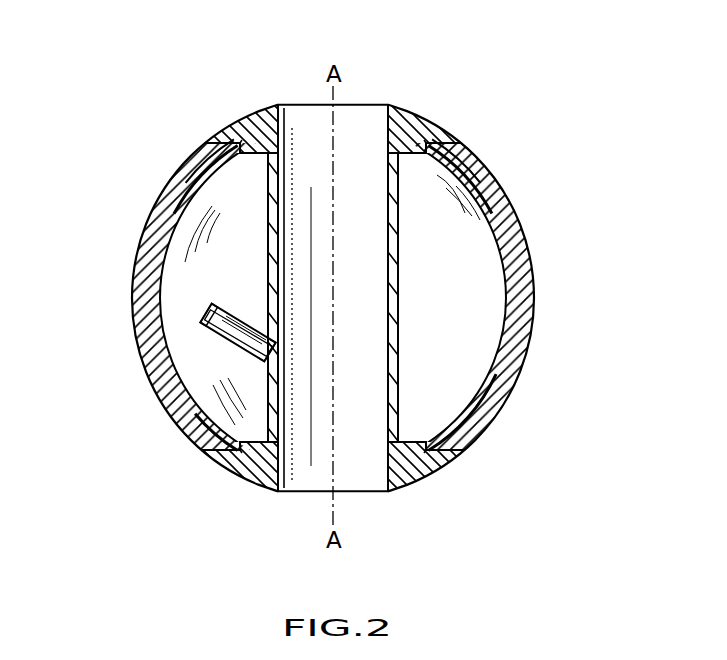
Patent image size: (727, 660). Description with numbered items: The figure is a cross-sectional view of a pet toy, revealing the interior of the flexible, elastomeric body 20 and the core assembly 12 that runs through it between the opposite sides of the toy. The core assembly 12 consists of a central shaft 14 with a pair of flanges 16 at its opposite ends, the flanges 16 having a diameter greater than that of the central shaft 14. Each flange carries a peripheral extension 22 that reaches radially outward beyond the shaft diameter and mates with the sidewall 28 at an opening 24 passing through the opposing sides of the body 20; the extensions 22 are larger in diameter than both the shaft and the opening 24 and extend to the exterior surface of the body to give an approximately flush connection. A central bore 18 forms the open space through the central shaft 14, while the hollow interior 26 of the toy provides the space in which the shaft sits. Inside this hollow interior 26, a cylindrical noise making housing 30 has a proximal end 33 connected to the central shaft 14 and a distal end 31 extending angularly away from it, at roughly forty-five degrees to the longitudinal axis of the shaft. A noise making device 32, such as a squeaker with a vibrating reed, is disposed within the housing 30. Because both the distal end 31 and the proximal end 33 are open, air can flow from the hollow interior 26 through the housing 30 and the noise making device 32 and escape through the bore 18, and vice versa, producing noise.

The core assembly 12 is at (292, 102).
The central shaft 14 is at (268, 232).
The flanges 16 is at (243, 122).
The central bore 18 is at (396, 178).
The body 20 is at (130, 262).
The peripheral extension 22 is at (226, 136).
The opening 24 is at (233, 146).
The hollow interior 26 is at (228, 216).
The sidewall 28 is at (140, 290).
The noise making housing 30 is at (210, 340).
The distal end 31 is at (207, 313).
The noise making device 32 is at (200, 318).
The proximal end 33 is at (272, 357).